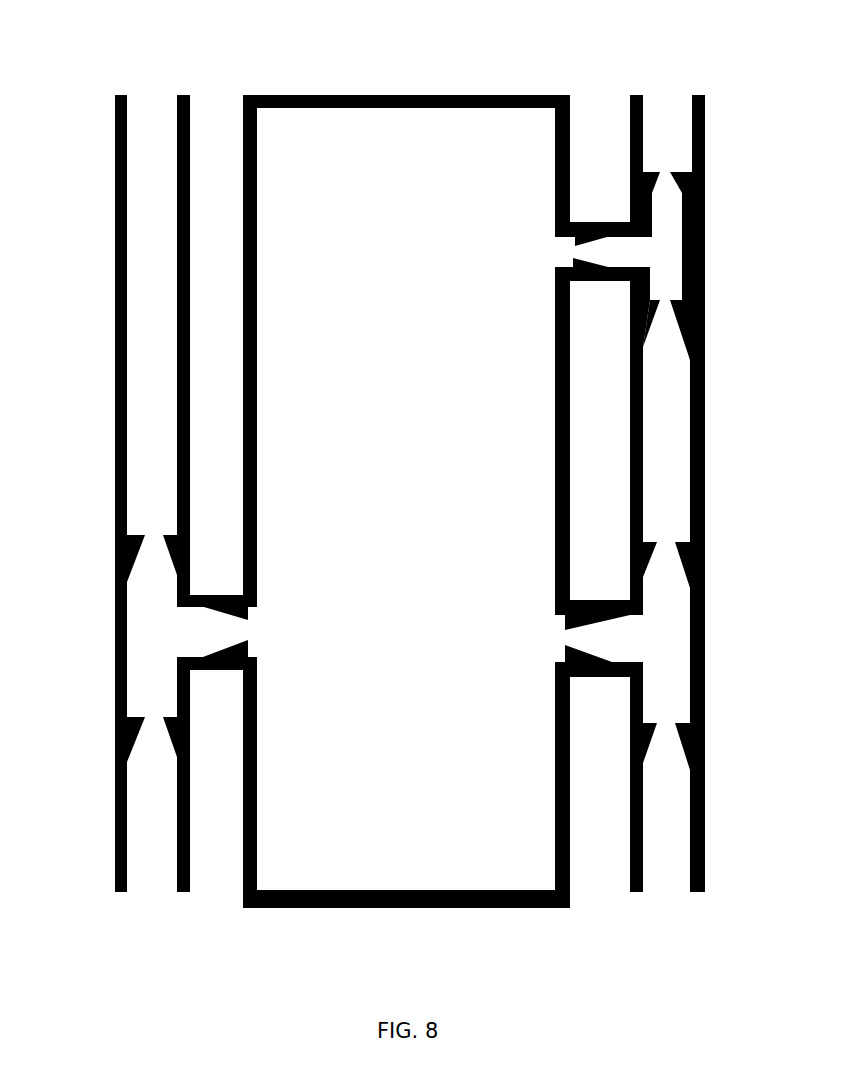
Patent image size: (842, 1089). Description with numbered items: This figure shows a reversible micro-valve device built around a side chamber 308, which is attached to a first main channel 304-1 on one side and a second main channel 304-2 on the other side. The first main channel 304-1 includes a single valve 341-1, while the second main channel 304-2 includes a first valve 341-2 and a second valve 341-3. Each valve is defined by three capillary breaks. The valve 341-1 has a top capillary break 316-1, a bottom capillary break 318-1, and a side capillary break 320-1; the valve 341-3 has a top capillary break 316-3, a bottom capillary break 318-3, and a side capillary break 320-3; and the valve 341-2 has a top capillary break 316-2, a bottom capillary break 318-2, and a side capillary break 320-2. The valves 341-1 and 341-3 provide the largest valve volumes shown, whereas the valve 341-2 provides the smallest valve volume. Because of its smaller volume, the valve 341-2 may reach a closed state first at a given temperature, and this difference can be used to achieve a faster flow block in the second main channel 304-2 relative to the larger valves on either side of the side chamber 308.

The side chamber 308 is at (358, 95).
The first main channel 304-1 is at (128, 109).
The second main channel 304-2 is at (643, 118).
The top capillary break 316-1 is at (115, 540).
The top capillary break 316-2 is at (705, 170).
The top capillary break 316-3 is at (705, 542).
The bottom capillary break 318-1 is at (115, 720).
The bottom capillary break 318-2 is at (705, 298).
The bottom capillary break 318-3 is at (705, 720).
The valve 341-1 is at (115, 634).
The first valve 341-2 is at (705, 240).
The second valve 341-3 is at (705, 635).
The side capillary break 320-1 is at (228, 680).
The side capillary break 320-2 is at (583, 222).
The side capillary break 320-3 is at (584, 680).